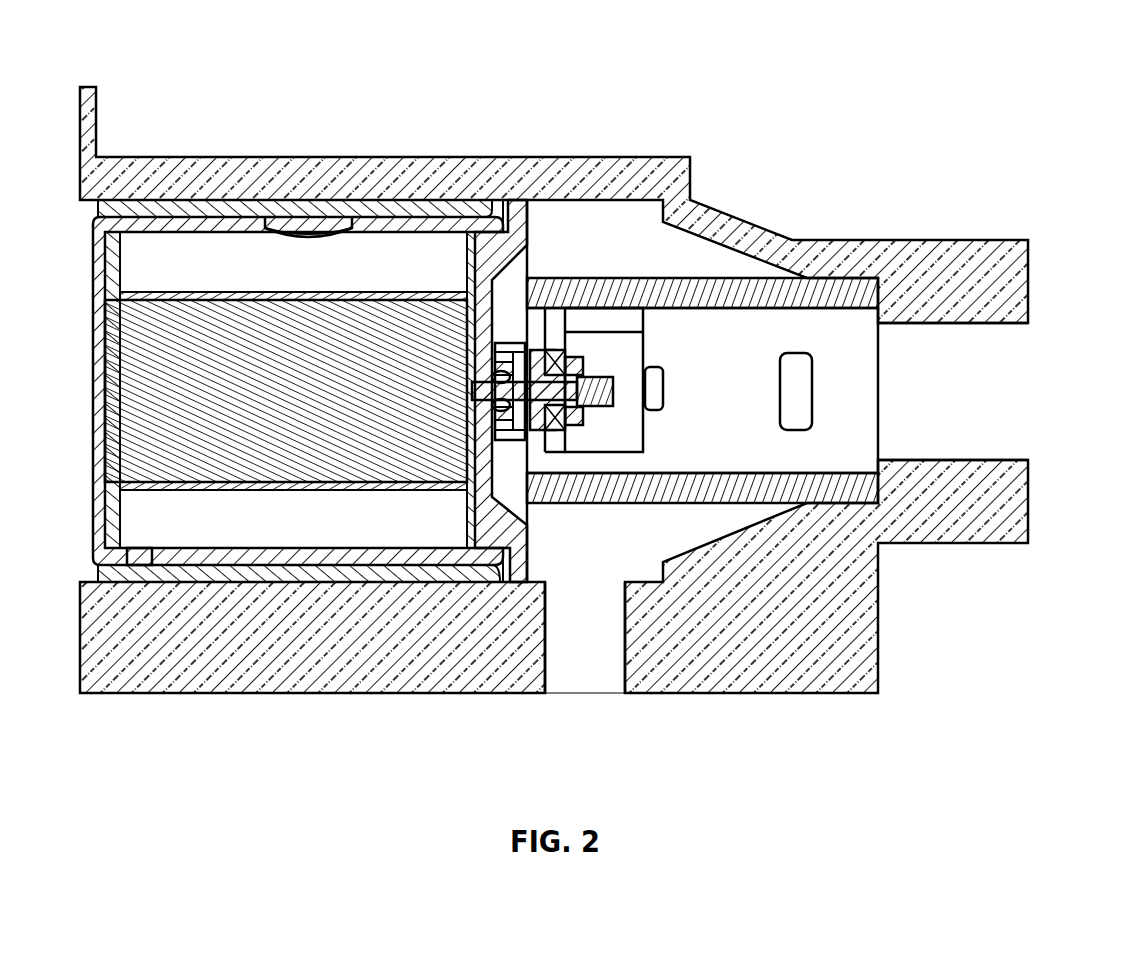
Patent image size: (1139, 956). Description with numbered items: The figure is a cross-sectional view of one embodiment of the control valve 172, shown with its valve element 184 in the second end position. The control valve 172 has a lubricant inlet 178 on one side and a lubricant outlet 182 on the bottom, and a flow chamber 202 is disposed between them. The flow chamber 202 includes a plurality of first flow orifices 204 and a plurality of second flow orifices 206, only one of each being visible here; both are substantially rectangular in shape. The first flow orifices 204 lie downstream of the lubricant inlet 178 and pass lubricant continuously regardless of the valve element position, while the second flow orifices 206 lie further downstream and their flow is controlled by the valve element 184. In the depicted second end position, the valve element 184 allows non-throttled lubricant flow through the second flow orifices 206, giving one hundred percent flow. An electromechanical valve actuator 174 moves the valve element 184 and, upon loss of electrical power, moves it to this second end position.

The control valve 172 is at (866, 54).
The electromechanical valve actuator 174 is at (167, 223).
The lubricant inlet 178 is at (1018, 398).
The lubricant outlet 182 is at (584, 694).
The valve element 184 is at (592, 318).
The flow chamber 202 is at (720, 352).
The first flow orifices 204 is at (795, 353).
The second flow orifices 206 is at (653, 367).